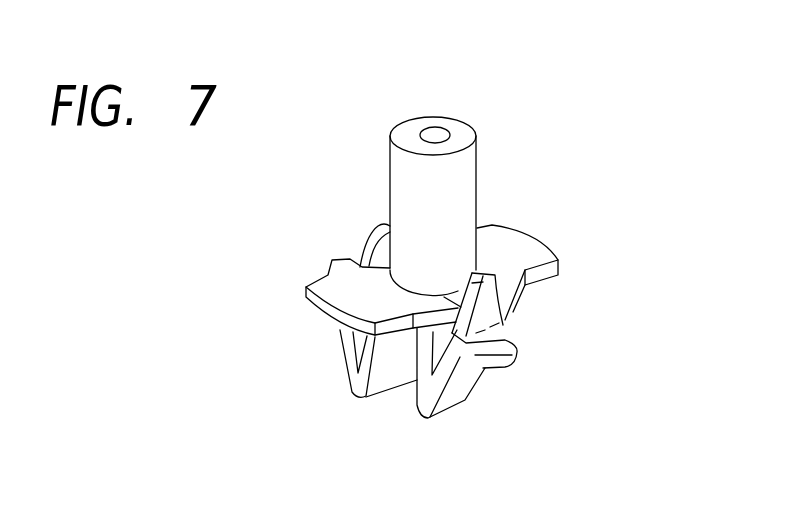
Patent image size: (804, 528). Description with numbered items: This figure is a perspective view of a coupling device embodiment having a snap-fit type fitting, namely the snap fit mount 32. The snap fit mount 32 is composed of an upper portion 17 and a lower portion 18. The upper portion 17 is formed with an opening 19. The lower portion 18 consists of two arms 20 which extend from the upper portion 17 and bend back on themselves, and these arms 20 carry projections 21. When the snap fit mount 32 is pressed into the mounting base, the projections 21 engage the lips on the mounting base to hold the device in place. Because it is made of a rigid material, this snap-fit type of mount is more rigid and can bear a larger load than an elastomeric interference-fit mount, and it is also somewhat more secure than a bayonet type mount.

The upper portion 17 is at (465, 185).
The lower portion 18 is at (487, 307).
The opening 19 is at (435, 127).
The arms 20 is at (353, 378).
The projections 21 is at (513, 357).
The snap fit mount 32 is at (578, 257).